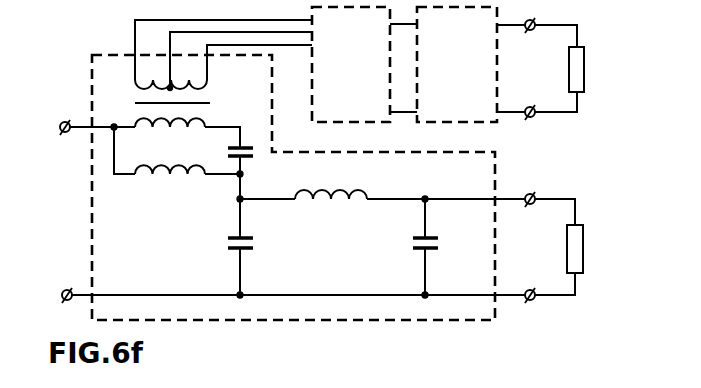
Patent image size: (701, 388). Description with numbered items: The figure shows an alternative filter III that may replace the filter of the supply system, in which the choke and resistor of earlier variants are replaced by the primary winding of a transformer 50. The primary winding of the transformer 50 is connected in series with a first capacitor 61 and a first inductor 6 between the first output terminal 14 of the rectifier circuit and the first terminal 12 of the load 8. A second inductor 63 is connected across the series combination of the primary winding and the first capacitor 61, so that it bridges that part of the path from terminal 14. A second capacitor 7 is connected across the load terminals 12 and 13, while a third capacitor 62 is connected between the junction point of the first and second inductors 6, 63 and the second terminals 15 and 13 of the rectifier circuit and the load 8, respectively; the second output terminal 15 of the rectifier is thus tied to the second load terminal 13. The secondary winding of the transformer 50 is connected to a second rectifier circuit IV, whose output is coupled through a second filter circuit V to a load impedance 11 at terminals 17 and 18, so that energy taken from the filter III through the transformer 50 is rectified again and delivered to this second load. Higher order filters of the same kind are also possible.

The filter III is at (90, 152).
The second rectifier circuit IV is at (351, 64).
The second filter circuit V is at (457, 64).
The transformer 50 is at (203, 115).
The first output terminal of the rectifier circuit 14 is at (70, 120).
The second output terminal of the rectifier circuit 15 is at (72, 288).
The second inductor 63 is at (155, 177).
The first capacitor 61 is at (255, 158).
The third capacitor 62 is at (248, 250).
The first inductor 6 is at (343, 201).
The second capacitor 7 is at (438, 246).
The first load terminal 12 is at (535, 192).
The second load terminal 13 is at (532, 301).
The load 8 is at (566, 250).
The output terminal 17 is at (535, 18).
The output terminal 18 is at (532, 118).
The load impedance 11 is at (585, 72).